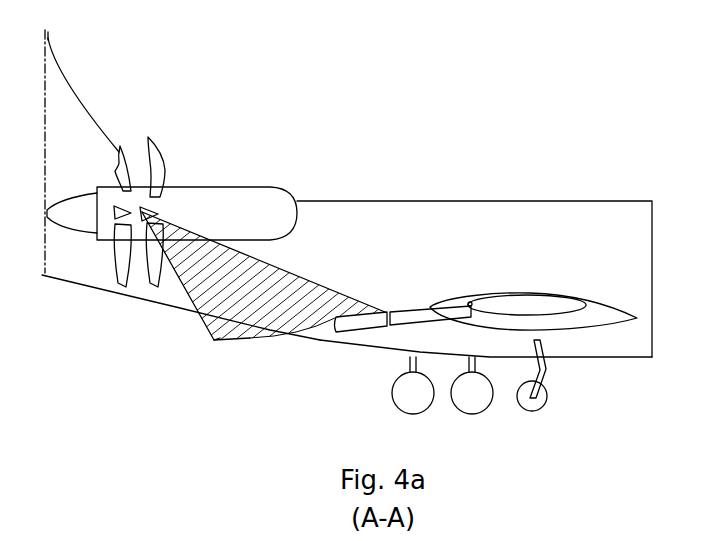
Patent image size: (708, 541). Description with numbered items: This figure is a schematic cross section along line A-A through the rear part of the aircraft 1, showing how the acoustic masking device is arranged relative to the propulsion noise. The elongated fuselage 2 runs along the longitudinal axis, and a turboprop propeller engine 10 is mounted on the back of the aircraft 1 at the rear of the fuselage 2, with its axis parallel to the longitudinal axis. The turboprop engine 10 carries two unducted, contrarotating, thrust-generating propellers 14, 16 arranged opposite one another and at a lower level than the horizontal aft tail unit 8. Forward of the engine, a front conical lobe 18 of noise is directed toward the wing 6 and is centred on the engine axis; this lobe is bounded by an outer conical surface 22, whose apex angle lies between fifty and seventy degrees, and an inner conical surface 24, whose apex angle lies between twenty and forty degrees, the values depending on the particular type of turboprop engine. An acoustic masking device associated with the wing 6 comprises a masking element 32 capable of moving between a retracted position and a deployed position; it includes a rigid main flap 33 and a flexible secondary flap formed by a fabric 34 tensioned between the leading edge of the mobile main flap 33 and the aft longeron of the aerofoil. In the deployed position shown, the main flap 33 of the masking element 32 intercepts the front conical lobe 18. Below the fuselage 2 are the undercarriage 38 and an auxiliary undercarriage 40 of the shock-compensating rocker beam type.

The aircraft 1 is at (356, 75).
The fuselage 2 is at (466, 206).
The wing 6 is at (628, 310).
The horizontal aft tail unit 8 is at (70, 103).
The turboprop propeller engine 10 is at (221, 192).
The propeller 14 is at (126, 146).
The propeller 16 is at (162, 144).
The front conical lobe 18 is at (253, 318).
The outer conical surface 22 is at (192, 236).
The inner conical surface 24 is at (213, 343).
The masking element 32 is at (354, 395).
The main flap 33 is at (347, 335).
The fabric 34 is at (391, 327).
The undercarriage 38 is at (422, 404).
The auxiliary undercarriage 40 is at (546, 394).